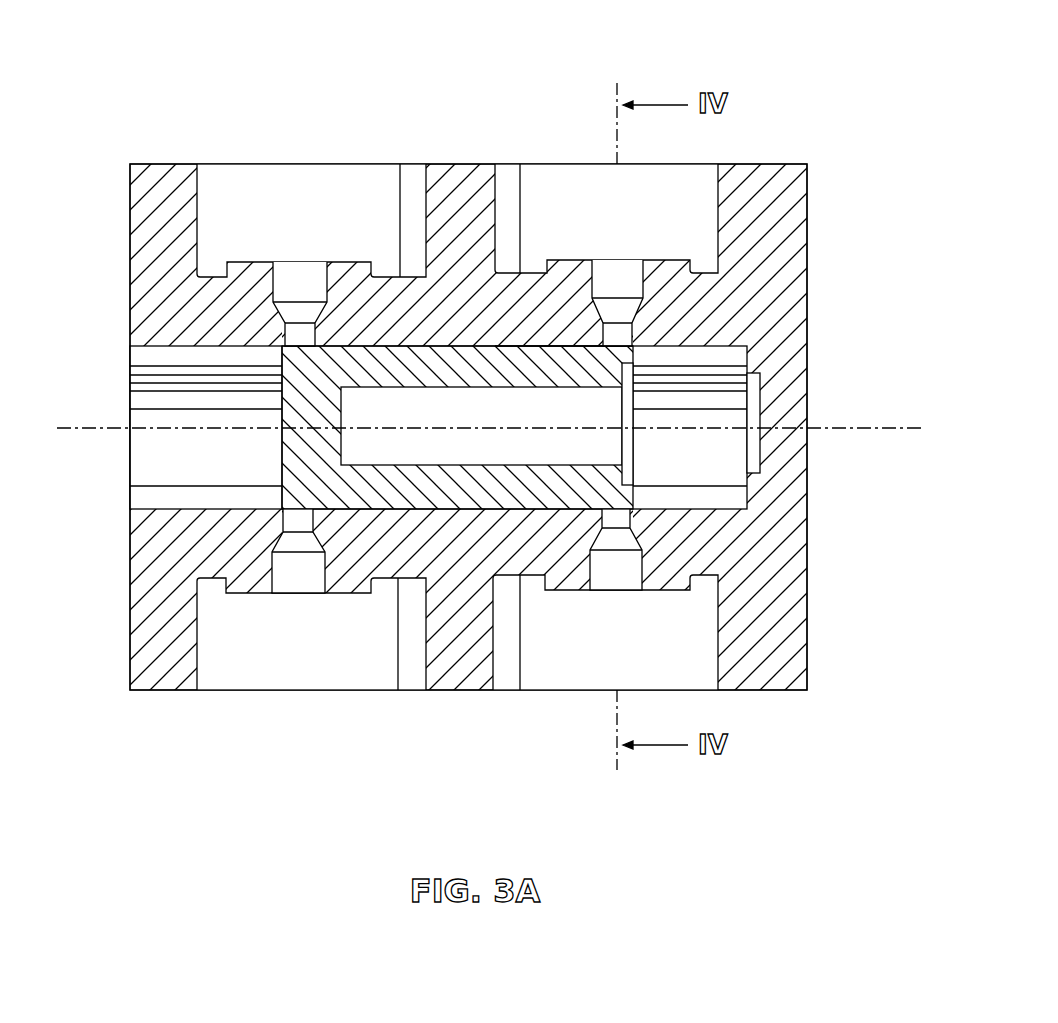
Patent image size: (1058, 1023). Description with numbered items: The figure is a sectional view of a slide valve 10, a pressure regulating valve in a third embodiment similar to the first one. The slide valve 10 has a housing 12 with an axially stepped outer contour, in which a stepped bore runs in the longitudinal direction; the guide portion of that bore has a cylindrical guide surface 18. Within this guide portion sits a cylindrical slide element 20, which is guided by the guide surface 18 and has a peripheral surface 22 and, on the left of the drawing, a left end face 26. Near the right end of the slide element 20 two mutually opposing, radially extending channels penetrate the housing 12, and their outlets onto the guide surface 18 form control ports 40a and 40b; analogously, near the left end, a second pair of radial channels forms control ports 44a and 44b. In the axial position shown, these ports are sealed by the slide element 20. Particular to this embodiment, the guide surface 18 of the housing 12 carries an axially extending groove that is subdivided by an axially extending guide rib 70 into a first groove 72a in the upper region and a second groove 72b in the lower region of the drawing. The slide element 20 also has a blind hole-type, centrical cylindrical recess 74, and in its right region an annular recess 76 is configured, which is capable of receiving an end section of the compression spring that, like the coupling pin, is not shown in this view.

The slide valve 10 is at (791, 117).
The housing 12 is at (788, 246).
The guide surface 18 is at (340, 345).
The slide element 20 is at (463, 350).
The peripheral surface 22 is at (523, 344).
The left end face 26 is at (282, 456).
The control port 40a is at (622, 517).
The control port 40b is at (622, 336).
The control port 44a is at (302, 520).
The control port 44b is at (298, 342).
The rib 70 is at (153, 400).
The first groove 72a is at (128, 373).
The second groove 72b is at (158, 448).
The cylindrical recess 74 is at (454, 446).
The annular recess 76 is at (645, 472).